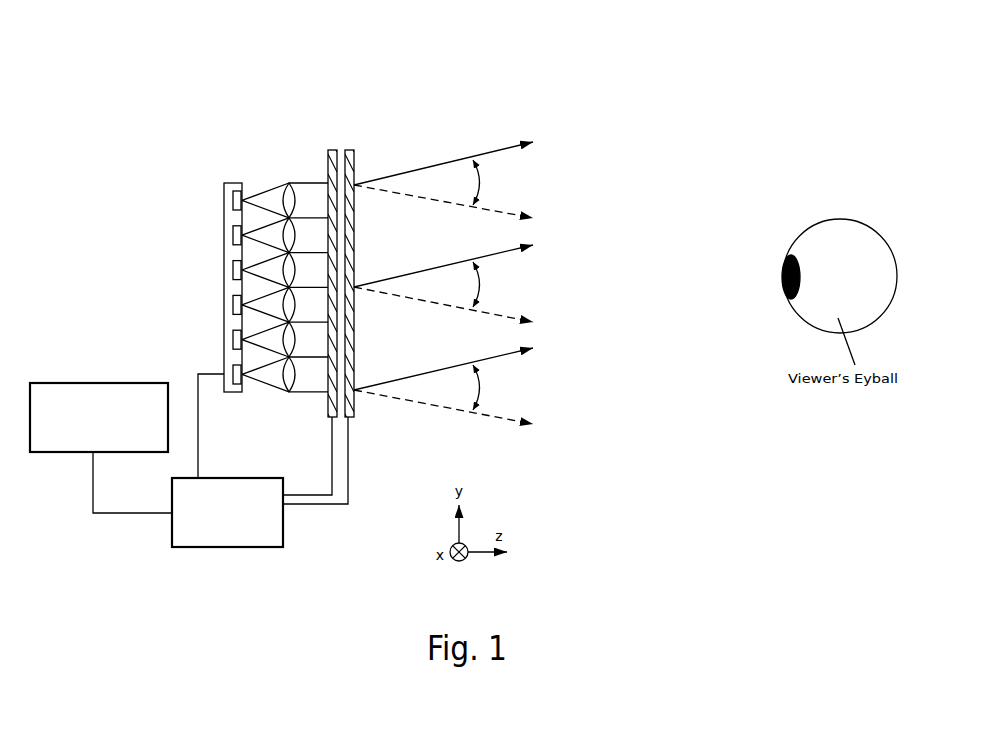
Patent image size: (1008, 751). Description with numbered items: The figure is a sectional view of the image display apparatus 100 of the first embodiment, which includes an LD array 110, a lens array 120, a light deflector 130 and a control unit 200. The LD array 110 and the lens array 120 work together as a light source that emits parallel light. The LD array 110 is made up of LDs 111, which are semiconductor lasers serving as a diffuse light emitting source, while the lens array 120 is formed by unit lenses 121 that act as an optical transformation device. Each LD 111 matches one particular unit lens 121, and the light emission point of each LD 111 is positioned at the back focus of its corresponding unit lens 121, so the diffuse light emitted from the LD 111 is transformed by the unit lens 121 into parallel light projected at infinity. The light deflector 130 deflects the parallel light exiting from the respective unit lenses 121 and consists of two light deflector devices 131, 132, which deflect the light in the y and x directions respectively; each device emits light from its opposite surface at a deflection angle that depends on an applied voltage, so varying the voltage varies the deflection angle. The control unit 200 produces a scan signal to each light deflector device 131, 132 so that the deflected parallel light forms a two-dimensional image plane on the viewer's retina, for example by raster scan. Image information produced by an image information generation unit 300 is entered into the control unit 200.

The image display apparatus 100 is at (236, 99).
The LD array 110 is at (232, 188).
The LD 111 is at (237, 270).
The lens array 120 is at (290, 182).
The unit lens 121 is at (291, 386).
The light deflector 130 is at (398, 46).
The light deflector device 131 is at (332, 150).
The light deflector device 132 is at (350, 150).
The control unit 200 is at (229, 524).
The image information generation unit 300 is at (101, 448).